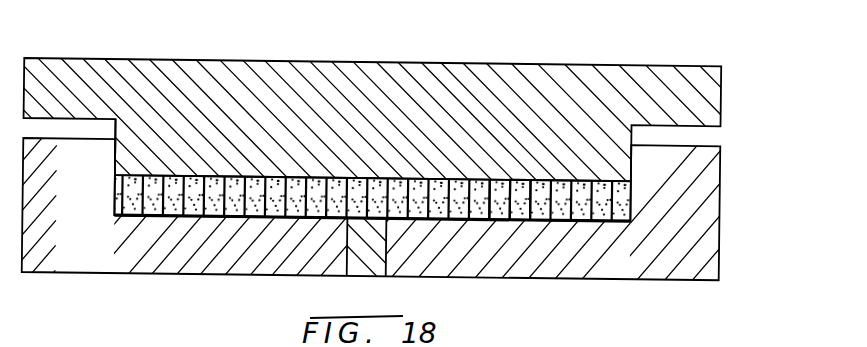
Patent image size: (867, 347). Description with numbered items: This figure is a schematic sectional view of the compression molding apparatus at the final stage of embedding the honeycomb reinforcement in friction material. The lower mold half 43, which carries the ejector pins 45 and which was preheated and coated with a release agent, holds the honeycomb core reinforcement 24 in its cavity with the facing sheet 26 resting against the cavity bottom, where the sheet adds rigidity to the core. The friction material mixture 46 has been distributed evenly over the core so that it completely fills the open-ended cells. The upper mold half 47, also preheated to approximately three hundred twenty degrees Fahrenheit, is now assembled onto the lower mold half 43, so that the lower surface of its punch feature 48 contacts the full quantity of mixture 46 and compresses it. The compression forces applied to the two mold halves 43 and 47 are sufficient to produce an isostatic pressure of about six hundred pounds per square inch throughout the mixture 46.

The honeycomb core reinforcement 24 is at (633, 192).
The facing sheet 26 is at (620, 223).
The lower mold half 43 is at (118, 262).
The ejector pins 45 is at (367, 265).
The friction material mixture 46 is at (498, 208).
The upper mold half 47 is at (126, 78).
The punch feature 48 is at (115, 155).